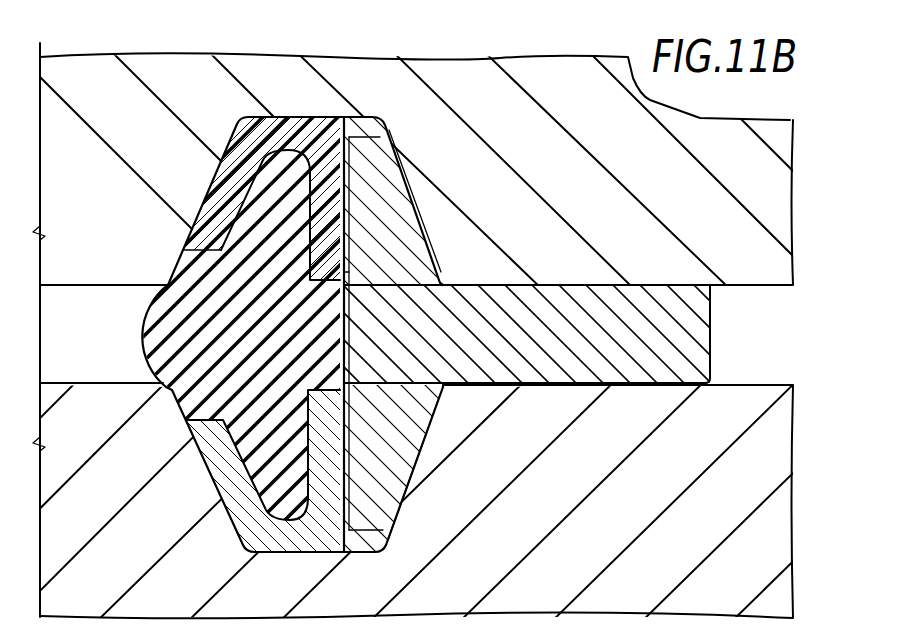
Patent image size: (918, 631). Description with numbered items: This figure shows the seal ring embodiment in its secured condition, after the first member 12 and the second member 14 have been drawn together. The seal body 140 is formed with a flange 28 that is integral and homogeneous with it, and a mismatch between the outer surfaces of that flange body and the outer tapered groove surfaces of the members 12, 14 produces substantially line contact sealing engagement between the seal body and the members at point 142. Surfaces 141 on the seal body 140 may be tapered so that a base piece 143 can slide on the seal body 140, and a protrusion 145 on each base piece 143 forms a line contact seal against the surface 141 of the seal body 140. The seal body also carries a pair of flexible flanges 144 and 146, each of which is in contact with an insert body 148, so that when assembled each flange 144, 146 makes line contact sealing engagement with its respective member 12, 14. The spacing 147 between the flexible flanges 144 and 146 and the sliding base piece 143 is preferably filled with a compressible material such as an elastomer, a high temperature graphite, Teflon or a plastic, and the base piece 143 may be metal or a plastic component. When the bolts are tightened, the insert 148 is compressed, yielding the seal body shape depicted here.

The member 12 is at (773, 213).
The second member 14 is at (772, 515).
The flange 28 is at (693, 335).
The seal body 140 is at (452, 387).
The surfaces 141 is at (347, 207).
The point 142 is at (385, 148).
The base piece 143 is at (350, 445).
The flexible flange 144 is at (217, 202).
The protrusion 145 is at (347, 273).
The flexible flange 146 is at (230, 482).
The spacing 147 is at (252, 162).
The insert body 148 is at (200, 328).